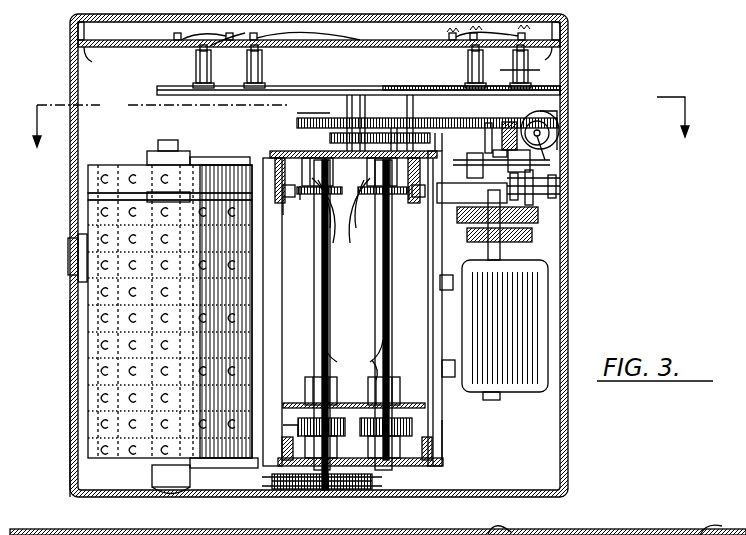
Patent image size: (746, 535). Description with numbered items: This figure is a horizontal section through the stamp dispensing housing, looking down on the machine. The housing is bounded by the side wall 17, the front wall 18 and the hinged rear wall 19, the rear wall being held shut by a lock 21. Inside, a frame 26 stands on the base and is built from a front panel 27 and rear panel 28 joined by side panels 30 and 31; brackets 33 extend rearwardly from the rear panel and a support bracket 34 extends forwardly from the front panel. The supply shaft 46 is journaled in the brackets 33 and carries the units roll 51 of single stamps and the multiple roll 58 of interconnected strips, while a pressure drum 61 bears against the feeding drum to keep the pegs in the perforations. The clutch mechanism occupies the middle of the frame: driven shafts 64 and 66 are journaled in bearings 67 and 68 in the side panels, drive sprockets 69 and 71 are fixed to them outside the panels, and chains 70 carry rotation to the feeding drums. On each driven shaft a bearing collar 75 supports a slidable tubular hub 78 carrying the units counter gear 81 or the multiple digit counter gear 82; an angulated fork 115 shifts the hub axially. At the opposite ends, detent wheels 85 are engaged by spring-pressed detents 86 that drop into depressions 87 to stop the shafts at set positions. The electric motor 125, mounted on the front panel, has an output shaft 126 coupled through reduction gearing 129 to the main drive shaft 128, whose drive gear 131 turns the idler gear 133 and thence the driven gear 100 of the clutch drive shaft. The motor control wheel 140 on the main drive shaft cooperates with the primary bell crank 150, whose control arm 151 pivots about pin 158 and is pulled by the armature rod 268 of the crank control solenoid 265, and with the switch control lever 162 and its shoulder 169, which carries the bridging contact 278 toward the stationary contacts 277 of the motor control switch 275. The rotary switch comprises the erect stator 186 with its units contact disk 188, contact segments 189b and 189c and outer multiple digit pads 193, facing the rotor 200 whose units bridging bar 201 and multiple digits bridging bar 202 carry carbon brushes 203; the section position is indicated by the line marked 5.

The section line 5- 5 is at (360, 120).
The side wall 17 is at (358, 17).
The front wall 18 is at (556, 217).
The rear wall 19 is at (73, 330).
The lock 21 is at (67, 242).
The frame 26 is at (455, 440).
The front panel 27 is at (432, 287).
The rear panel 28 is at (270, 280).
The side panel 30 is at (290, 151).
The side panel 31 is at (418, 464).
The brackets 33 is at (222, 158).
The support bracket 34 is at (447, 225).
The supply shaft 46 is at (165, 141).
The units roll 51 is at (88, 173).
The multiple roll 58 is at (92, 440).
The pressure drum 61 is at (68, 531).
The driven shaft 64 is at (377, 266).
The driven shaft 66 is at (327, 283).
The bearing 67 is at (333, 173).
The bearing 68 is at (413, 157).
The drive sprocket 69 is at (355, 118).
The chain 70 is at (330, 140).
The drive sprocket 71 is at (352, 478).
The bearing collar 75 is at (353, 351).
The tubular hub 78 is at (407, 414).
The units counter gear 81 is at (365, 420).
The multiple digit counter gear 82 is at (298, 428).
The detent wheel 85 is at (341, 210).
The spring-pressed detent 86 is at (292, 200).
The depressions 87 is at (378, 222).
The driven gear 100 is at (300, 117).
The angulated fork 115 is at (333, 393).
The electric motor 125 is at (535, 318).
The output shaft 126 is at (502, 262).
The main drive shaft 128 is at (532, 120).
The reduction gearing 129 is at (512, 243).
The drive gear 131 is at (548, 118).
The idler gear 133 is at (417, 118).
The motor control wheel 140 is at (556, 182).
The primary bell crank 150 is at (458, 120).
The control arm 151 is at (552, 168).
The pivot pin 158 is at (476, 124).
The switch control lever 162 is at (548, 136).
The shoulder 169 is at (500, 122).
The stator 186 is at (305, 44).
The units contact disk 188 is at (430, 44).
The contact segment 189b is at (252, 72).
The contact segment 189c is at (468, 48).
The multiple digit pads 193 is at (175, 41).
The rotor 200 is at (163, 105).
The units bridging bar 201 is at (195, 86).
The multiple digits bridging bar 202 is at (530, 70).
The carbon brushes 203 is at (590, 61).
The crank control solenoid 265 is at (535, 126).
The armature rod 268 is at (548, 152).
The motor control switch 275 is at (550, 236).
The stationary contacts 277 is at (548, 197).
The bridging contact 278 is at (560, 190).